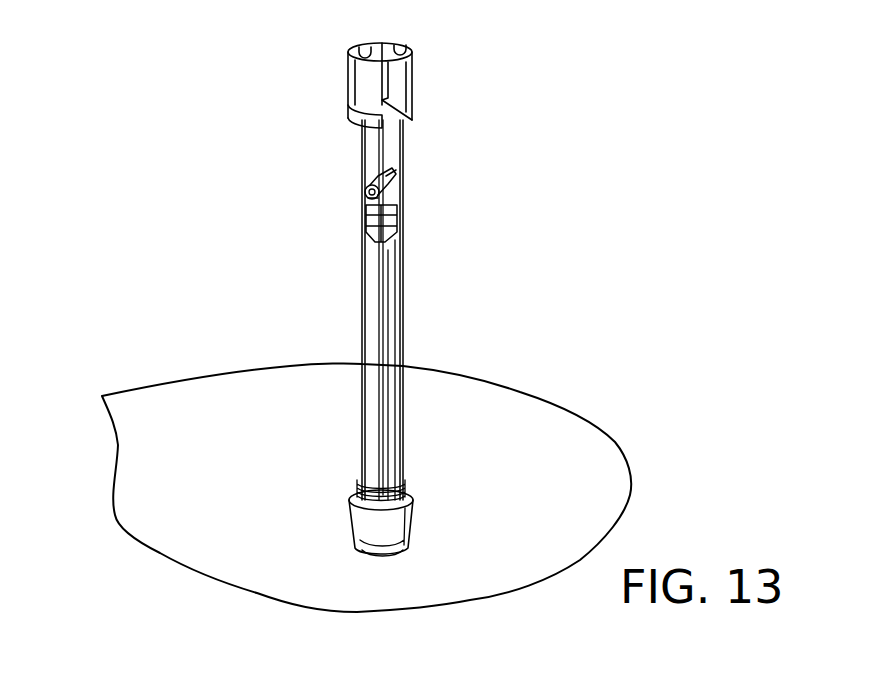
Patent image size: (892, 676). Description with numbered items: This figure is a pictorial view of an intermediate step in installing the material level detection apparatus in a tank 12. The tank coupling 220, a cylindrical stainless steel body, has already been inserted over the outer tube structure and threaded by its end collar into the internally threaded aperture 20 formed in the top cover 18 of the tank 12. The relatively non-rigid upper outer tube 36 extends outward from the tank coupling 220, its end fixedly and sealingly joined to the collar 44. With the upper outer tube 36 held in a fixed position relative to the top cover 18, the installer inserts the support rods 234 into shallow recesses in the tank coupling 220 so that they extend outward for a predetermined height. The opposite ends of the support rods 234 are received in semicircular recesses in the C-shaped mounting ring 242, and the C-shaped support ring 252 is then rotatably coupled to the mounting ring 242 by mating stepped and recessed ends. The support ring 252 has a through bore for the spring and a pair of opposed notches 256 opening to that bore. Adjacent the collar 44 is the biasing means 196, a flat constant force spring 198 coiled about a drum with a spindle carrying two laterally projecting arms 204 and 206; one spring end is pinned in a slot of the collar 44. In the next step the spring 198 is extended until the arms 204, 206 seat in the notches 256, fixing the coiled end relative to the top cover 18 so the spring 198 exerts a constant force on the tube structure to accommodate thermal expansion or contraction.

The tank 12 is at (622, 392).
The top cover 18 is at (200, 385).
The aperture 20 is at (400, 553).
The upper outer tube 36 is at (380, 408).
The collar 44 is at (395, 230).
The biasing means 196 is at (384, 173).
The constant force spring 198 is at (373, 188).
The arm 204 is at (392, 177).
The arm 206 is at (375, 196).
The tank coupling 220 is at (412, 520).
The support rods 234 is at (385, 140).
The mounting ring 242 is at (348, 113).
The support ring 252 is at (348, 73).
The notches 256 is at (364, 57).